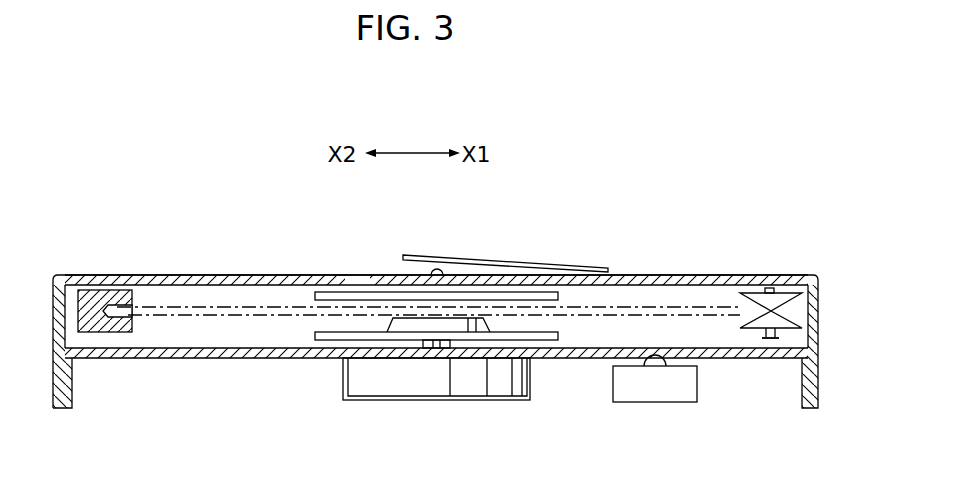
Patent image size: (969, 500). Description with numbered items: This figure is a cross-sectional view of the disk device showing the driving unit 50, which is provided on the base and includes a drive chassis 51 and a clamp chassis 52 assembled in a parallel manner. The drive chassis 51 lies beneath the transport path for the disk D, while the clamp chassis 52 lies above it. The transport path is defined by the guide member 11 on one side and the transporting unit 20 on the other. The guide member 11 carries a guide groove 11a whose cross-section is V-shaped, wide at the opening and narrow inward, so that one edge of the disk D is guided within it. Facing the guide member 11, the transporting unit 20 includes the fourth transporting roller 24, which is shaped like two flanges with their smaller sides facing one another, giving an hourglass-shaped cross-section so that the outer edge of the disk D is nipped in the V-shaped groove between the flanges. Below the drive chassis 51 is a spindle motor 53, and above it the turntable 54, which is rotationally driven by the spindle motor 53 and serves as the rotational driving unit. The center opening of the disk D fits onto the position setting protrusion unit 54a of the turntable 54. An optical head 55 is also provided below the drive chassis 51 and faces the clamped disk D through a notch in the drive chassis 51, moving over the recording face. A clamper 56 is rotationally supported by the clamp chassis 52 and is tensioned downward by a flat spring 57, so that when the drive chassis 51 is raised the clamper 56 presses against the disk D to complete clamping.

The guide member 11 is at (92, 300).
The guide groove 11a is at (113, 309).
The clamp chassis 52 is at (228, 275).
The clamper 56 is at (340, 275).
The flat spring 57 is at (452, 263).
The driving unit 50 is at (656, 212).
The fourth transporting roller 24 is at (792, 310).
The drive chassis 51 is at (140, 353).
The disk D is at (213, 318).
The spindle motor 53 is at (395, 383).
The position setting protrusion unit 54a is at (507, 327).
The turntable 54 is at (547, 342).
The optical head 55 is at (653, 382).
The transporting unit 20 is at (752, 340).